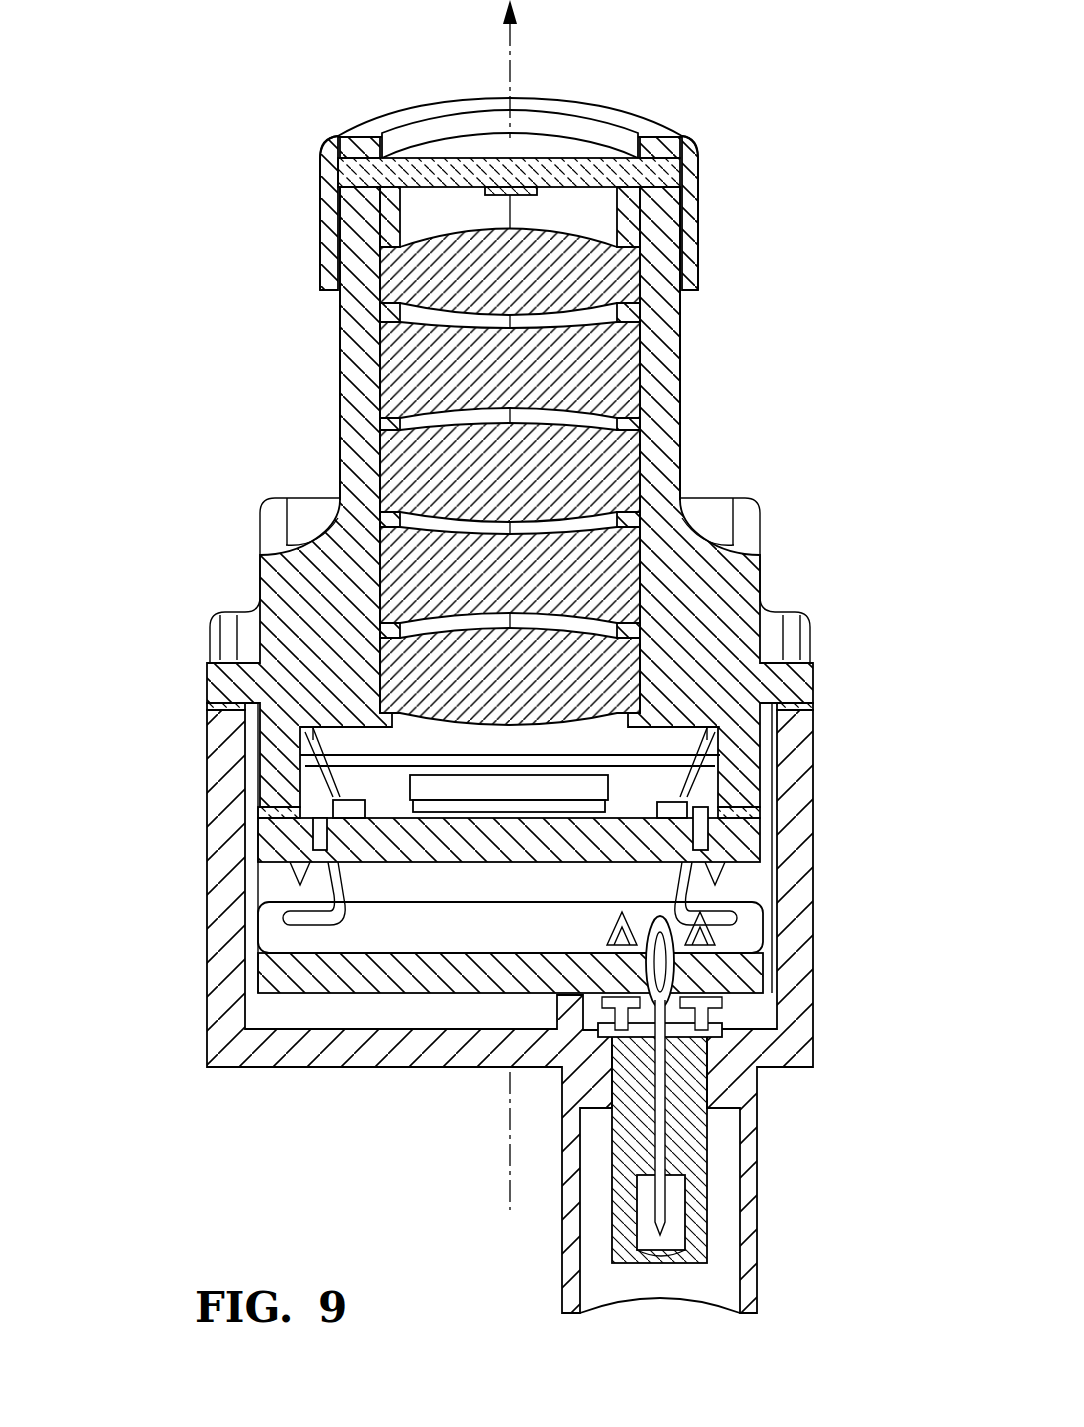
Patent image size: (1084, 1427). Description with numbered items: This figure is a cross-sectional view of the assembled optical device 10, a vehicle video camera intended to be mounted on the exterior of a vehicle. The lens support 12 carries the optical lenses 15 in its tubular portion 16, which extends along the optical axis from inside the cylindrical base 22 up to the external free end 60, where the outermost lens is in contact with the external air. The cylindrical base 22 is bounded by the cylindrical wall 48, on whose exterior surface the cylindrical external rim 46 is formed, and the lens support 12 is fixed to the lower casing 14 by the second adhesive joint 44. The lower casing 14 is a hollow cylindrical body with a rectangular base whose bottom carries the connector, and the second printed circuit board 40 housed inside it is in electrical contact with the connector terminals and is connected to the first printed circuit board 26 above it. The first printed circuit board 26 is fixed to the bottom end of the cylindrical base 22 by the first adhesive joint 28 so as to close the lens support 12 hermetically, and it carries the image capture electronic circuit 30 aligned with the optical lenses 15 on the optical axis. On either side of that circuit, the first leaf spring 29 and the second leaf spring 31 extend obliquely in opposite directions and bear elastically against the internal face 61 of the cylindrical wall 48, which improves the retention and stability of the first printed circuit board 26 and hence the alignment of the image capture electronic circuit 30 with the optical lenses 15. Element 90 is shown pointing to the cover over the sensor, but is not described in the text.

The optical device 10 is at (210, 262).
The lens support 12 is at (720, 386).
The lower casing 14 is at (822, 937).
The optical lenses 15 is at (580, 300).
The tubular portion 16 is at (370, 420).
The cylindrical base 22 is at (283, 662).
The first printed circuit board 26 is at (750, 845).
The first adhesive joint 28 is at (762, 812).
The first leaf spring 29 is at (308, 768).
The image capture electronic circuit 30 is at (567, 777).
The second leaf spring 31 is at (715, 770).
The second printed circuit board 40 is at (712, 972).
The second adhesive joint 44 is at (256, 712).
The cylindrical external rim 46 is at (230, 682).
The cylindrical wall 48 is at (773, 522).
The external free end 60 is at (650, 188).
The internal face 61 is at (312, 800).
The cover glass 90 is at (495, 748).